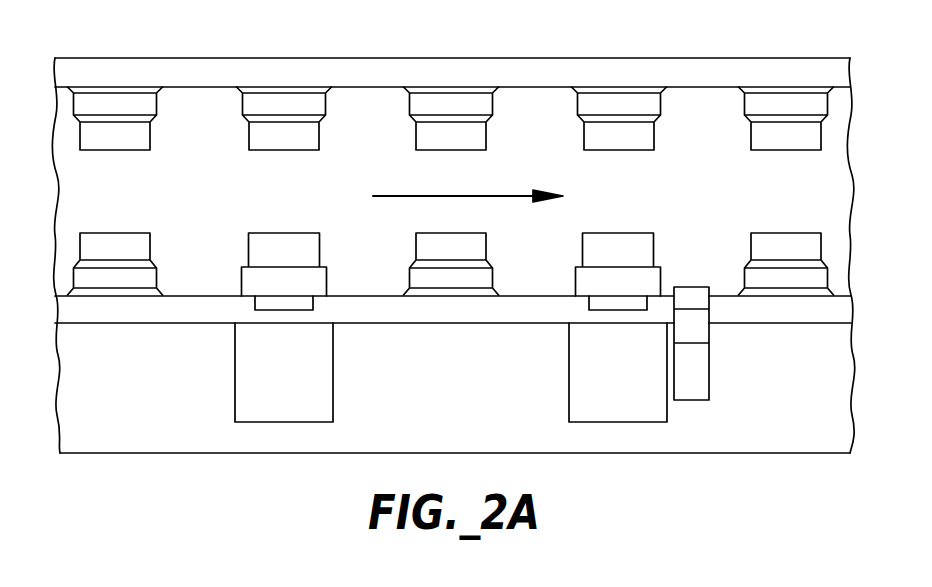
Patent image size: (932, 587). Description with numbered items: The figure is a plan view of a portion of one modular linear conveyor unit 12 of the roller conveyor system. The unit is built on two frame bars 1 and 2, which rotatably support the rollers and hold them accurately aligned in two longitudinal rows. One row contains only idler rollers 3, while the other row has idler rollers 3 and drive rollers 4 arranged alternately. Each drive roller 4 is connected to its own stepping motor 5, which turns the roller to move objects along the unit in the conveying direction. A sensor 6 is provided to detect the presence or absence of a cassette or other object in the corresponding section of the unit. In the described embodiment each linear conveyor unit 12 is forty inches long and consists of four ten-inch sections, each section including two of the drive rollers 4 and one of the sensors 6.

The frame bar 1 is at (679, 58).
The frame bar 2 is at (176, 437).
The idler roller 3 is at (290, 128).
The drive roller 4 is at (328, 253).
The stepping motor 5 is at (262, 422).
The sensor 6 is at (693, 400).
The linear conveyor unit 12 is at (296, 34).